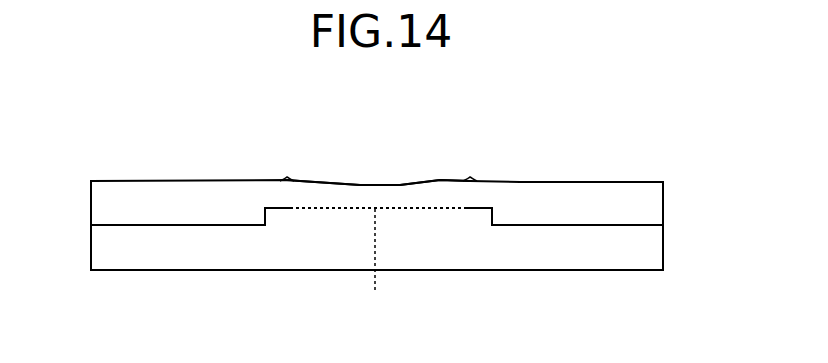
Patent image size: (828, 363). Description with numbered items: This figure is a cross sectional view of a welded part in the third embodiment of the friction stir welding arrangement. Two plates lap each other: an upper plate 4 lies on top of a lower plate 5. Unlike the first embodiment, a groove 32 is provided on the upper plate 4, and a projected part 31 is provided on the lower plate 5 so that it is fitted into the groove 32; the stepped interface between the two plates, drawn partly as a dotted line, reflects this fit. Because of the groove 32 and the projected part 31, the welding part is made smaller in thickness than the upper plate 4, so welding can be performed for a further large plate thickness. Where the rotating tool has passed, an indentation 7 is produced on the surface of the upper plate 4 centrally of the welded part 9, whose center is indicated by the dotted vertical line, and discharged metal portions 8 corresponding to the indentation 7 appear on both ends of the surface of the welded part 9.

The upper plate 4 is at (131, 181).
The lower plate 5 is at (125, 272).
The indentation 7 is at (378, 183).
The discharged metal portions 8 is at (287, 177).
The welded part 9 is at (377, 268).
The projected part 31 is at (480, 215).
The groove 32 is at (497, 205).